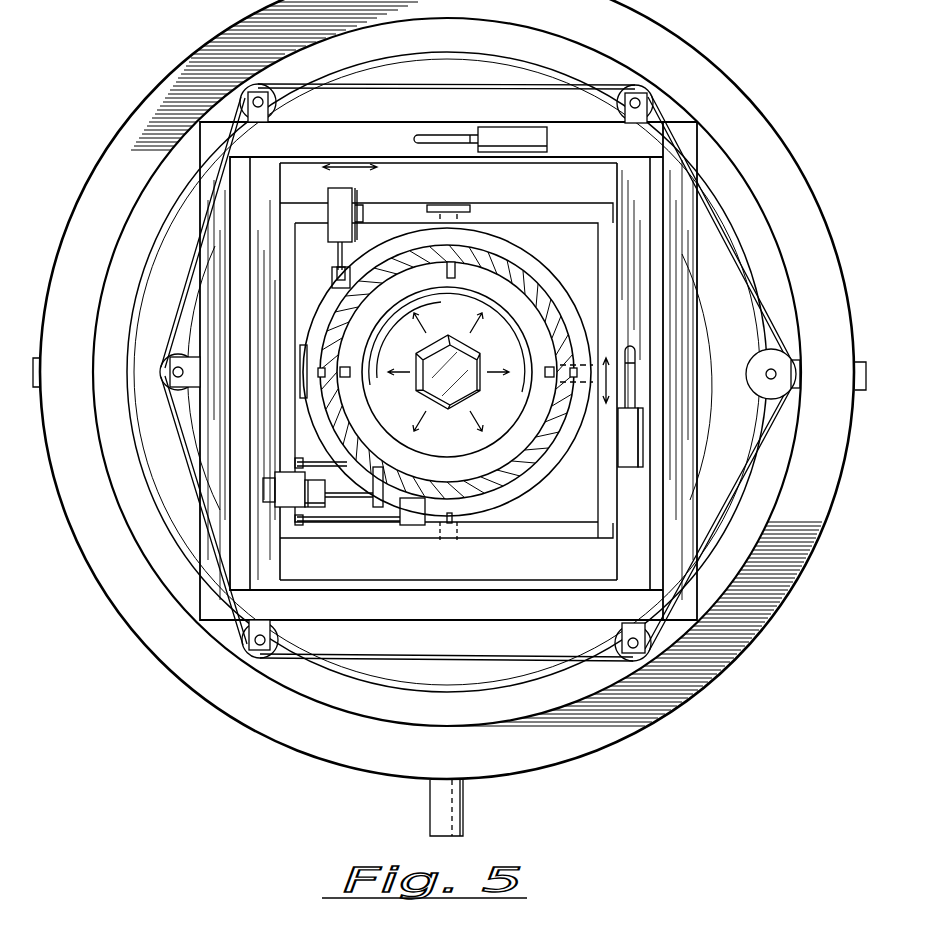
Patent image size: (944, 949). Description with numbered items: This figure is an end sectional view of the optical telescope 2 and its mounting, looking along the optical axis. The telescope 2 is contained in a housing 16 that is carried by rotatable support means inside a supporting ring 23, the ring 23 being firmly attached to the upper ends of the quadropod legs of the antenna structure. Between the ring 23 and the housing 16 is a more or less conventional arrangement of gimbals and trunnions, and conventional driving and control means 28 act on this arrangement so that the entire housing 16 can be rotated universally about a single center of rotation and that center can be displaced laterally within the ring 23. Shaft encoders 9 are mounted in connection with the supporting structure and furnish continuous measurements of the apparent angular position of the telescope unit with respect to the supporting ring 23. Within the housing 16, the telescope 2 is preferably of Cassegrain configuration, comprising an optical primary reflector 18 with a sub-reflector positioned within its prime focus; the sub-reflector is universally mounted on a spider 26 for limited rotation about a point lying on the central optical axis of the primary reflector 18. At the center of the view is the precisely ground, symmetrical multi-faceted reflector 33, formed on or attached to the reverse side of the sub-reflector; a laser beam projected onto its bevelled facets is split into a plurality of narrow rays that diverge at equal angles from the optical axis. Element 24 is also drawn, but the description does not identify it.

The optical telescope 2 is at (803, 116).
The supporting ring 23 is at (738, 92).
The driving and control means 28 is at (463, 137).
The shaft encoders 9 is at (508, 128).
The stop block 24 is at (448, 533).
The housing 16 is at (452, 483).
The primary reflector 18 is at (462, 440).
The spider 26 is at (458, 272).
The multi-faceted reflector 33 is at (467, 387).